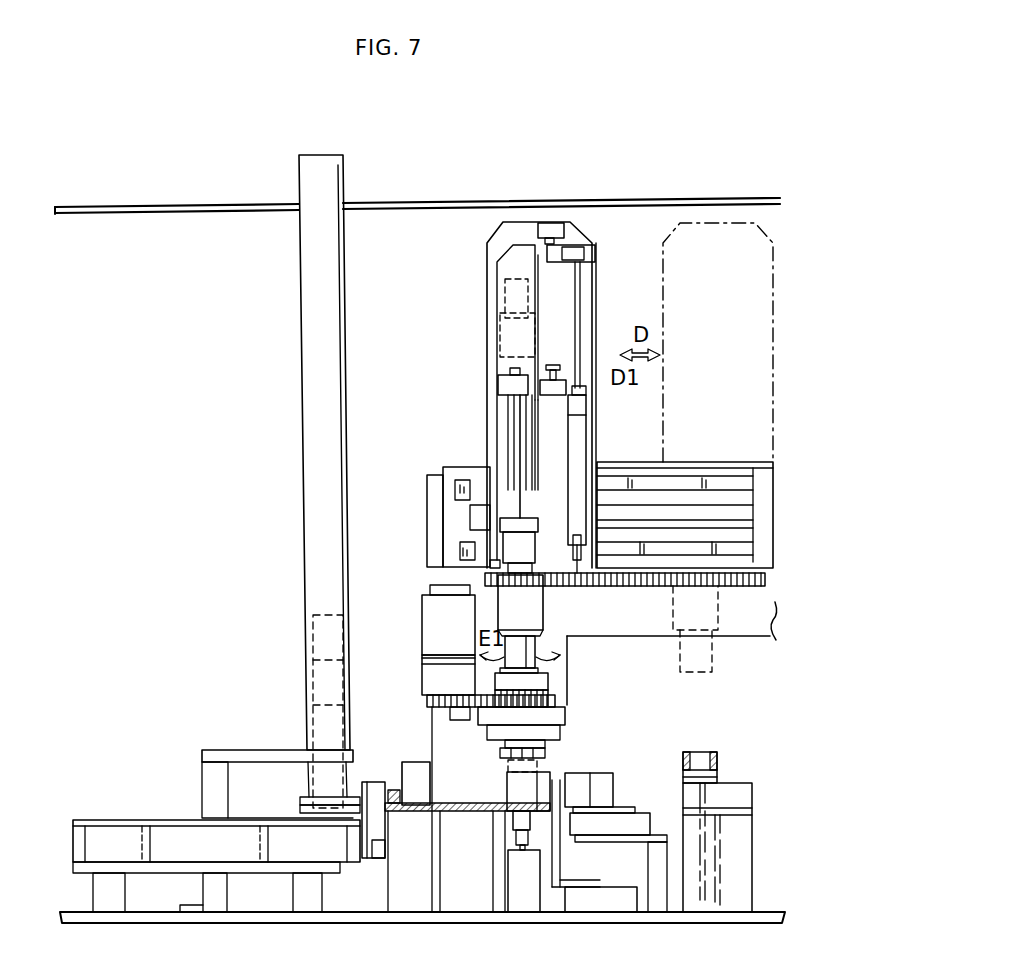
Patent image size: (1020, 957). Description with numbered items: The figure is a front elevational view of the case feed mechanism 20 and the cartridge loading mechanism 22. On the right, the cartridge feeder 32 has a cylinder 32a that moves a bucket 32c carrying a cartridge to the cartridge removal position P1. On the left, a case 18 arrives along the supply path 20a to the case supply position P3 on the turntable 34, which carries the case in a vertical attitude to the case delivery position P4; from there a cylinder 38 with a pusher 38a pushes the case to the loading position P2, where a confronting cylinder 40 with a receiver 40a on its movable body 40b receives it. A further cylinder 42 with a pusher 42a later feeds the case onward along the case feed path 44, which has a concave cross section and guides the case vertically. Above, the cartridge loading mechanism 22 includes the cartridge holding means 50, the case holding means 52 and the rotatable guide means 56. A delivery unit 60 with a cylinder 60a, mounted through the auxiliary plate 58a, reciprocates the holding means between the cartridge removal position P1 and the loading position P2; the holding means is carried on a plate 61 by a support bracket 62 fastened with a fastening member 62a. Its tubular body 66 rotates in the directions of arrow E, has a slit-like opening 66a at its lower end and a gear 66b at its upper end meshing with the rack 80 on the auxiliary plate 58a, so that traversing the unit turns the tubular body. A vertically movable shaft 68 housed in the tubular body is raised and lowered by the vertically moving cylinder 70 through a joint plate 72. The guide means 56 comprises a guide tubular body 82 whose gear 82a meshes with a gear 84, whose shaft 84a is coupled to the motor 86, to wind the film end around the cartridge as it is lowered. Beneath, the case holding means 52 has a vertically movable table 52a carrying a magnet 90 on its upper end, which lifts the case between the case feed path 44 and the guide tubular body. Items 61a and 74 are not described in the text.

The case 18 is at (312, 653).
The case feed mechanism 20 is at (295, 795).
The supply path 20a is at (306, 567).
The cartridge loading mechanism 22 is at (598, 307).
The cartridge feeder 32 is at (731, 780).
The cylinder 32a is at (750, 800).
The bucket 32c is at (682, 762).
The turntable 34 is at (390, 790).
The cylinder 38 is at (124, 827).
The pusher 38a is at (386, 844).
The cylinder 40 is at (640, 823).
The receiver 40a is at (584, 776).
The movable body 40b is at (620, 805).
The cylinder 42 is at (618, 888).
The pusher 42a is at (550, 780).
The case feed path 44 is at (455, 803).
The cartridge holding means 50 is at (505, 378).
The case holding means 52 is at (506, 870).
The vertically movable table 52a is at (520, 836).
The guide means 56 is at (570, 718).
The auxiliary plate 58a is at (778, 632).
The delivery unit 60 is at (703, 460).
The cylinder 60a is at (632, 466).
The plate 61 is at (487, 244).
The frame top bracket 61a is at (561, 239).
The support bracket 62 is at (528, 548).
The fastening member 62a is at (524, 516).
The tubular body 66 is at (548, 612).
The slit-like opening 66a is at (550, 636).
The gear 66b is at (490, 495).
The vertically movable shaft 68 is at (522, 432).
The vertically moving cylinder 70 is at (582, 424).
The joint plate 72 is at (503, 281).
The gear box 74 is at (500, 318).
The rack 80 is at (702, 588).
The guide tubular body 82 is at (552, 684).
The gear 82a is at (556, 702).
The gear 84 is at (440, 692).
The shaft 84a is at (458, 720).
The motor 86 is at (440, 621).
The magnet 90 is at (512, 818).
The arrow E is at (520, 652).
The cartridge removal position P1 is at (703, 750).
The loading position P2 is at (506, 790).
The case supply position P3 is at (320, 777).
The case delivery position P4 is at (416, 758).